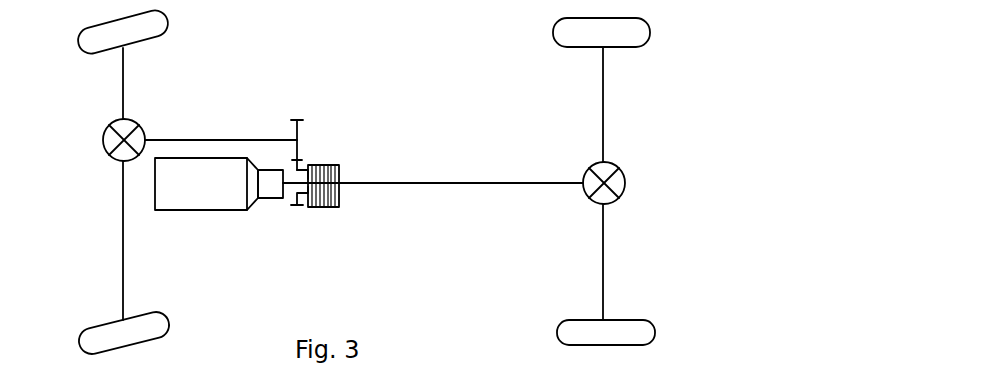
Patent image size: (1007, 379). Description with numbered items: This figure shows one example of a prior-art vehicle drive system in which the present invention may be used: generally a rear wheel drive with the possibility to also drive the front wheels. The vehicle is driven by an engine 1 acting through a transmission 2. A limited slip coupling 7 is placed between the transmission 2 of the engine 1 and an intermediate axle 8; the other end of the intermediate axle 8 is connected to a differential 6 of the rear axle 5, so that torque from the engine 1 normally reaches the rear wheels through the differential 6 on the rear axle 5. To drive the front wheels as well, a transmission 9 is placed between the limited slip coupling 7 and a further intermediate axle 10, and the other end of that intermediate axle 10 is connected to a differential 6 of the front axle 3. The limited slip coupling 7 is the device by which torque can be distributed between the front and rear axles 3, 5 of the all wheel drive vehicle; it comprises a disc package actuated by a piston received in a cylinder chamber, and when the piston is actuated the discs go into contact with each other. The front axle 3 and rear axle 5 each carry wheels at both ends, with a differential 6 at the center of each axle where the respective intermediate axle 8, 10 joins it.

The engine 1 is at (200, 203).
The transmission 2 is at (268, 188).
The front axle 3 is at (125, 65).
The rear axle 5 is at (602, 110).
The differential 6 is at (103, 135).
The limited slip coupling 7 is at (339, 204).
The intermediate axle 8 is at (420, 183).
The transmission 9 is at (297, 147).
The intermediate axle 10 is at (218, 140).